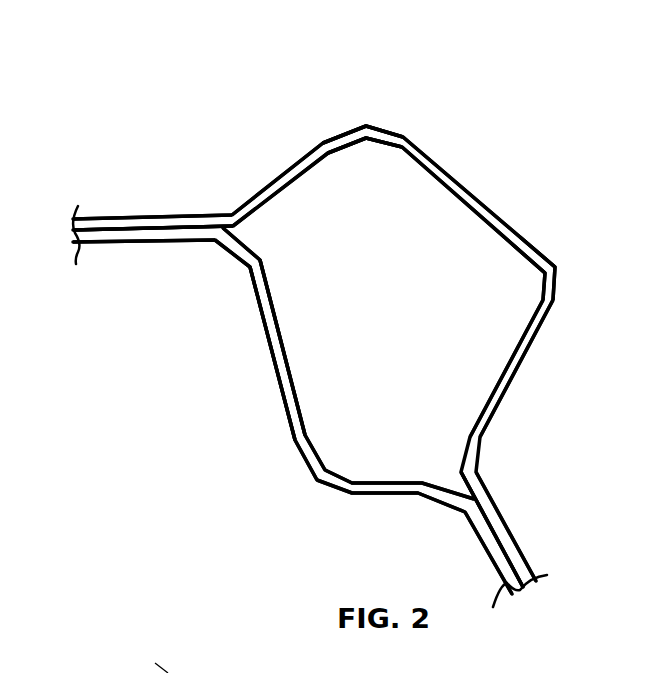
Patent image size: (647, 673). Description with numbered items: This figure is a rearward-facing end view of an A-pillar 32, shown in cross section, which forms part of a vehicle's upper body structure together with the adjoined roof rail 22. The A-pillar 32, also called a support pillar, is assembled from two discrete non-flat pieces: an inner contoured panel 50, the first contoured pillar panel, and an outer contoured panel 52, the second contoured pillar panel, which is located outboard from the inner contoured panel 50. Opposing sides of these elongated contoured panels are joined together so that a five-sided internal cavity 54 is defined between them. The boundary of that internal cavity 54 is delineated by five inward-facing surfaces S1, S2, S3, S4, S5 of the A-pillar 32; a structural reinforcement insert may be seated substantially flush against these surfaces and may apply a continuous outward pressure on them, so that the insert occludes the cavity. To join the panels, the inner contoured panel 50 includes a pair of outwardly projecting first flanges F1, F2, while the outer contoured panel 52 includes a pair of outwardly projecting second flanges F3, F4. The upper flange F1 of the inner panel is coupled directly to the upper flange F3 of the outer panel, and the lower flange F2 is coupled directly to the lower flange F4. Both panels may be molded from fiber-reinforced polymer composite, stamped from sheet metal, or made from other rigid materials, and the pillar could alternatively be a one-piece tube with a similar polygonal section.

The A-pillar 32 is at (204, 82).
The internal cavity 54 is at (318, 207).
The inward-facing surface S4 is at (335, 150).
The outer contoured panel 52 is at (452, 173).
The inward-facing surface S3 is at (472, 212).
The inward-facing surface S2 is at (495, 387).
The inward-facing surface S1 is at (386, 478).
The inner contoured panel 50 is at (282, 400).
The inward-facing surface S5 is at (285, 348).
The upper flange F3 is at (115, 217).
The upper flange F1 is at (115, 247).
The lower flange F4 is at (530, 563).
The lower flange F2 is at (510, 577).
The roof rail 22 is at (168, 672).